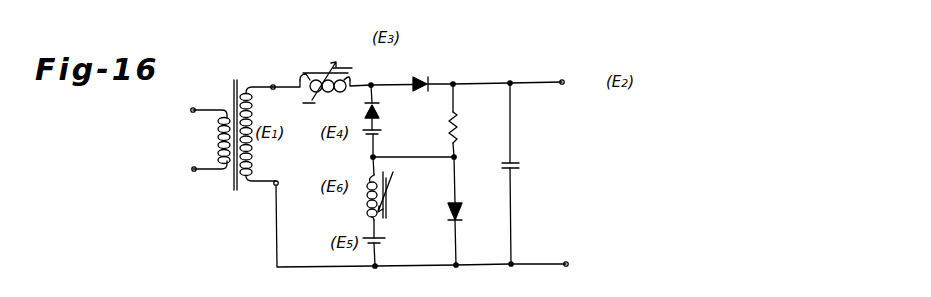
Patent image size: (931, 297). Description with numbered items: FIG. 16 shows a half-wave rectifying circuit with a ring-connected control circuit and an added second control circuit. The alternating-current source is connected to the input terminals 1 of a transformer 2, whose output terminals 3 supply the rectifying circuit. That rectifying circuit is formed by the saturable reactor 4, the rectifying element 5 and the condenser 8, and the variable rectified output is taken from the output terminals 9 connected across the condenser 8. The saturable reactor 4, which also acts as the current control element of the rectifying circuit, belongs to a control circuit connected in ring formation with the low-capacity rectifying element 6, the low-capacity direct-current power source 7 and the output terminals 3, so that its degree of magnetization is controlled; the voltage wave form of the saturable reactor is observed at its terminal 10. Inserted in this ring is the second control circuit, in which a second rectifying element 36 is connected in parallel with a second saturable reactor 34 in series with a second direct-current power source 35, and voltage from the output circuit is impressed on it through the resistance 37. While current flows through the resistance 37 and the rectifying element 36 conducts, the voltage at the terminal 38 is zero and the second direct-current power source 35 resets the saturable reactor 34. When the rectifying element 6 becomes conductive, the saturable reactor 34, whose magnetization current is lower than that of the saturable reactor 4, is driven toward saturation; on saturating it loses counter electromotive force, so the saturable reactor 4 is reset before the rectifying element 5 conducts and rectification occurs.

The input terminals 1 is at (191, 110).
The transformer 2 is at (222, 69).
The output terminals 3 is at (276, 84).
The saturable reactor 4 is at (322, 70).
The rectifying element 5 is at (421, 81).
The rectifying element of low capacity 6 is at (385, 113).
The direct-current power source of low capacity 7 is at (385, 136).
The condenser 8 is at (525, 167).
The output terminals 9 is at (566, 82).
The terminal of the saturable reactor 10 is at (371, 83).
The second saturable reactor 34 is at (392, 190).
The second direct-current power source 35 is at (386, 240).
The second rectifying element 36 is at (465, 213).
The resistance 37 is at (462, 129).
The terminal 38 is at (371, 158).